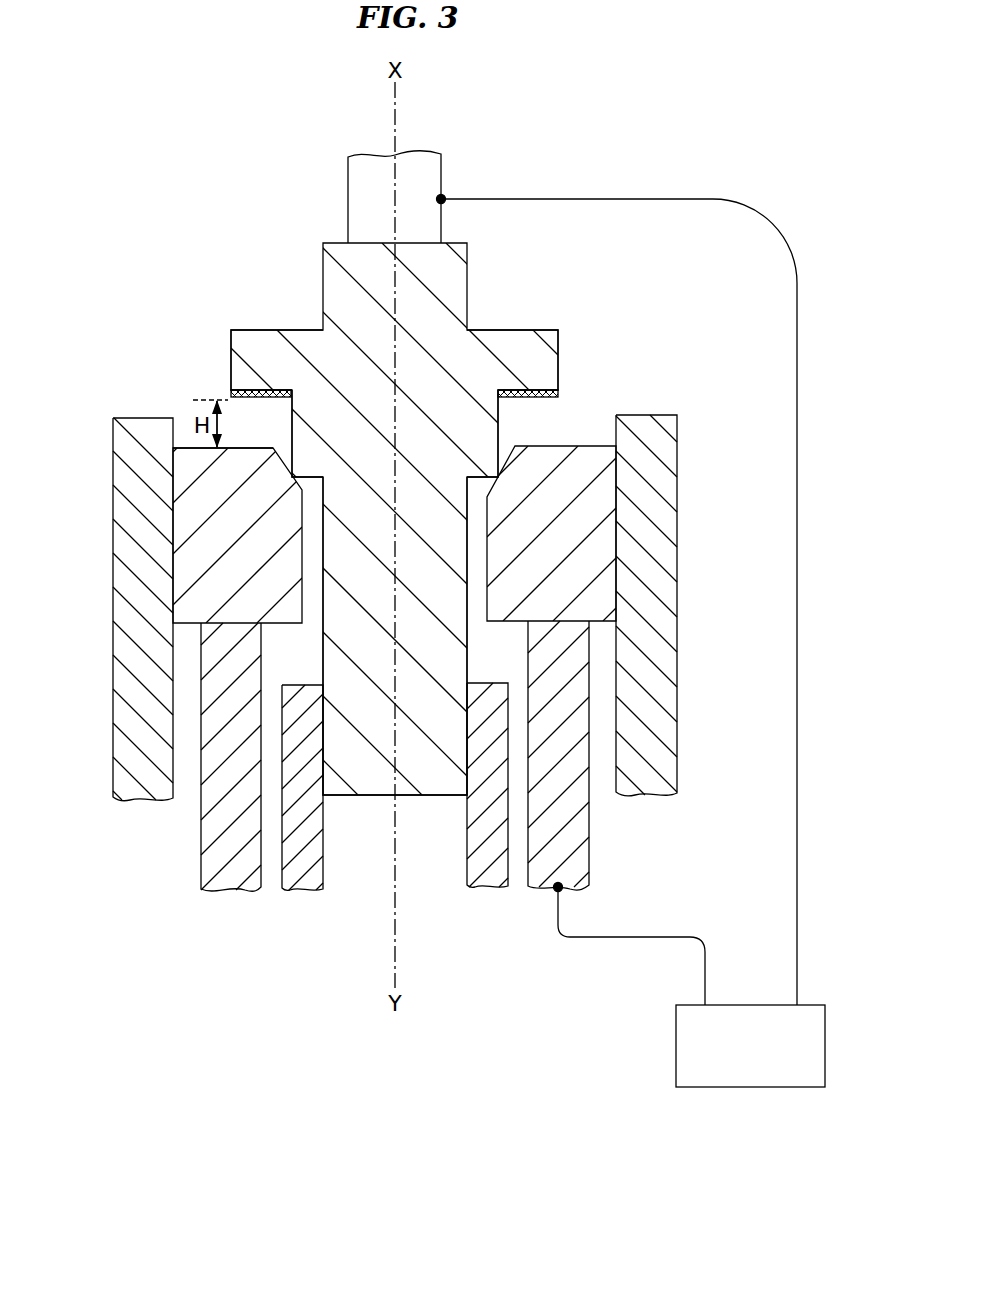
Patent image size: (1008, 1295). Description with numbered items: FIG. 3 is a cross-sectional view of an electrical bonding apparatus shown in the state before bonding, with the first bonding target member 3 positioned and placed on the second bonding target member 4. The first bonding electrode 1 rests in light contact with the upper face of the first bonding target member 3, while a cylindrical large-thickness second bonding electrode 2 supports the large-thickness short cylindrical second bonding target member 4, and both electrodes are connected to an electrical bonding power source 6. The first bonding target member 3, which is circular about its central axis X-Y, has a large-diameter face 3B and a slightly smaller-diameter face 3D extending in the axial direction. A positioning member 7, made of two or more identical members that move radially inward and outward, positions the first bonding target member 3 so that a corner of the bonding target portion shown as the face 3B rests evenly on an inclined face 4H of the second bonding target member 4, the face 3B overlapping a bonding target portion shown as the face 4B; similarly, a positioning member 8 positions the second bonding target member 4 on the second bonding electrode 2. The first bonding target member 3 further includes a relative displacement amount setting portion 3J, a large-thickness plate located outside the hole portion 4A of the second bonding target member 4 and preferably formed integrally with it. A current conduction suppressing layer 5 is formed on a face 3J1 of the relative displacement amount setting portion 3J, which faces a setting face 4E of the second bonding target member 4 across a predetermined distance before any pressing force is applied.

The first bonding electrode 1 is at (346, 190).
The second bonding electrode 2 is at (592, 853).
The first bonding target member 3 is at (478, 272).
The relative displacement amount setting portion 3J is at (523, 343).
The face 3J1 is at (247, 388).
The face 3B is at (292, 422).
The face 3D is at (468, 670).
The second bonding target member 4 is at (390, 615).
The hole portion 4A is at (288, 657).
The face 4B is at (488, 555).
The setting face 4E is at (187, 447).
The inclined face 4H is at (297, 475).
The current conduction suppressing layer 5 is at (520, 399).
The electrical bonding power source 6 is at (743, 1089).
The positioning member 7 is at (458, 872).
The positioning member 8 is at (681, 732).